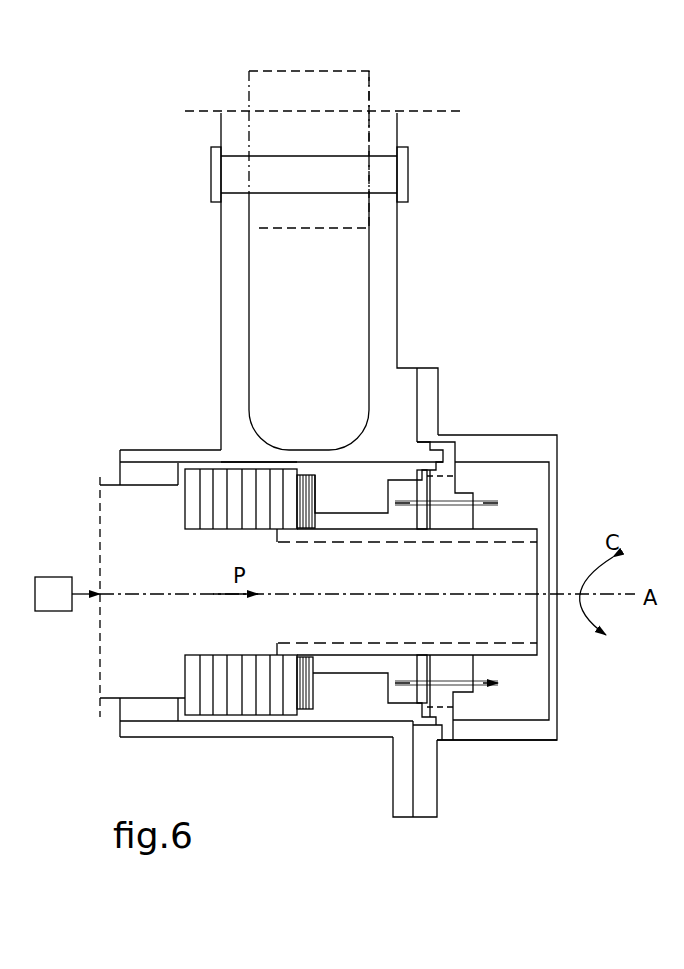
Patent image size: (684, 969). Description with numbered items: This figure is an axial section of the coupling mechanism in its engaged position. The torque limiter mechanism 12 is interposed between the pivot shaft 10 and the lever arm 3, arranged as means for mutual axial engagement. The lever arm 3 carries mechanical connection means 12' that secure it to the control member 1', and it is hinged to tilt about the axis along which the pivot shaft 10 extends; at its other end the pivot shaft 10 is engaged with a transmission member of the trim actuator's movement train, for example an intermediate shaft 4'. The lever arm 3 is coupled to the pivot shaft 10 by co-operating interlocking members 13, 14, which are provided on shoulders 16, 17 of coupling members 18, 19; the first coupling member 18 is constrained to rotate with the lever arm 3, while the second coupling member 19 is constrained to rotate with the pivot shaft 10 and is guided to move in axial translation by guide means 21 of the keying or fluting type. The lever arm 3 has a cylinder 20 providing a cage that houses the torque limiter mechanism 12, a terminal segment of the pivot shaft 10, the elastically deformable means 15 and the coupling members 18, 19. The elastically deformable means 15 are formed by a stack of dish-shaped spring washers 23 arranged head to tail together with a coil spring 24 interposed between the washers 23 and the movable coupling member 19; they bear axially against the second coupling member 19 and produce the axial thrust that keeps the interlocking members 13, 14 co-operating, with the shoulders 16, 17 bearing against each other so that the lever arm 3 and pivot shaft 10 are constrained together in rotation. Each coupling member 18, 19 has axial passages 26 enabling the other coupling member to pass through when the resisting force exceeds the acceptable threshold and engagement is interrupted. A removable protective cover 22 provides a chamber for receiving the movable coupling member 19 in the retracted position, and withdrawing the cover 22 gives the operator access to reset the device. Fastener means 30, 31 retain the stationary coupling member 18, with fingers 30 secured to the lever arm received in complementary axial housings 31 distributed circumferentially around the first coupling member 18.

The control member 1' is at (353, 149).
The lever arm 3 is at (221, 248).
The intermediate shaft 4' is at (67, 594).
The pivot shaft 10 is at (144, 525).
The torque limiter mechanism 12 is at (263, 540).
The mechanical connection means 12' is at (272, 174).
The interlocking member 13 is at (417, 513).
The interlocking member 14 is at (433, 472).
The elastically deformable means 15 is at (255, 458).
The shoulder 16 is at (452, 485).
The shoulder 17 is at (385, 690).
The first coupling member 18 is at (463, 733).
The second coupling member 19 is at (377, 500).
The cylinder 20 is at (188, 450).
The guide means 21 is at (310, 645).
The protective cover 22 is at (538, 435).
The dish-shaped spring washers 23 is at (237, 715).
The coil spring 24 is at (308, 710).
The axial passages 26 is at (463, 594).
The fingers 30 is at (469, 771).
The axial housings 31 is at (442, 728).